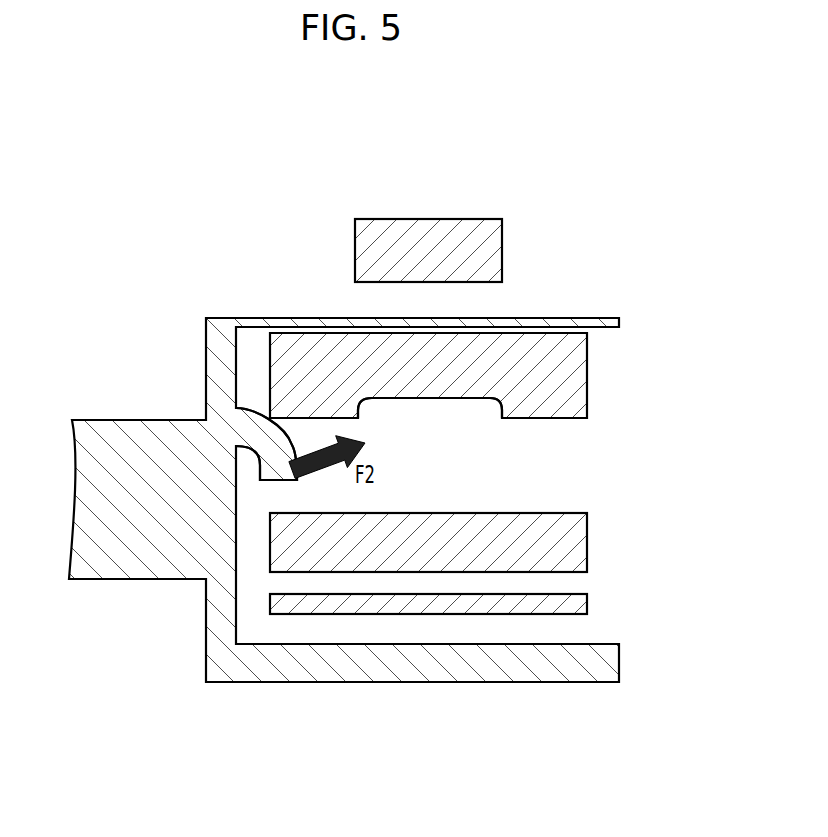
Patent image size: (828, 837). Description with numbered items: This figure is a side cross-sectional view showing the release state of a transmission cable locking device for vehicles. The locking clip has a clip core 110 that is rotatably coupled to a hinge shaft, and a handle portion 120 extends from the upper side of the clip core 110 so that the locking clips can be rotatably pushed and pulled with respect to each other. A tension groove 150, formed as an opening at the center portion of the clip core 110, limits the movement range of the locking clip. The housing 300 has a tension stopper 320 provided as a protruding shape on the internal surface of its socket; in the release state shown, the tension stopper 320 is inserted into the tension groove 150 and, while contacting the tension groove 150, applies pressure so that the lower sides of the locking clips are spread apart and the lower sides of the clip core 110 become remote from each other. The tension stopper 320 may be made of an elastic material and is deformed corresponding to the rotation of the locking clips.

The clip core 110 is at (303, 350).
The handle portion 120 is at (458, 233).
The tension groove 150 is at (415, 407).
The housing 300 is at (320, 668).
The tension stopper 320 is at (258, 430).